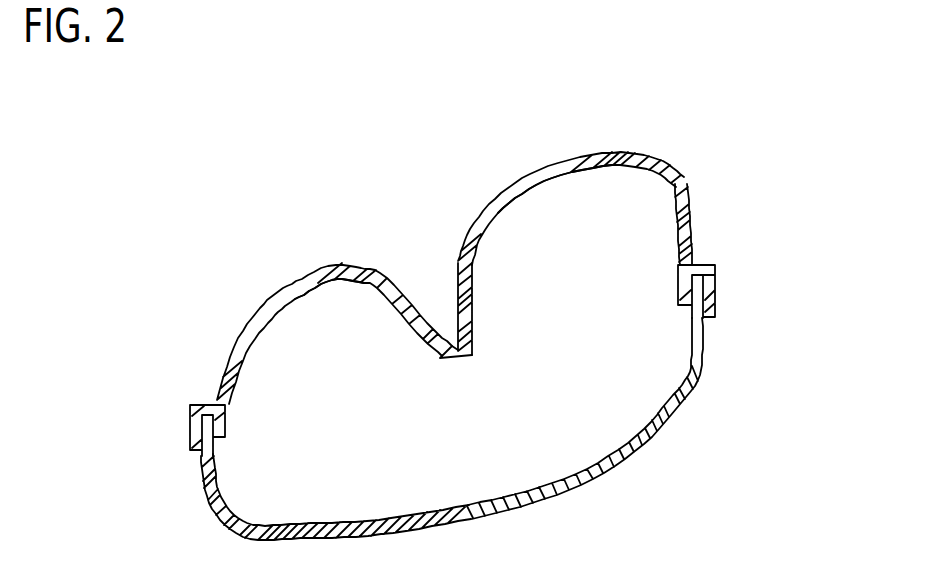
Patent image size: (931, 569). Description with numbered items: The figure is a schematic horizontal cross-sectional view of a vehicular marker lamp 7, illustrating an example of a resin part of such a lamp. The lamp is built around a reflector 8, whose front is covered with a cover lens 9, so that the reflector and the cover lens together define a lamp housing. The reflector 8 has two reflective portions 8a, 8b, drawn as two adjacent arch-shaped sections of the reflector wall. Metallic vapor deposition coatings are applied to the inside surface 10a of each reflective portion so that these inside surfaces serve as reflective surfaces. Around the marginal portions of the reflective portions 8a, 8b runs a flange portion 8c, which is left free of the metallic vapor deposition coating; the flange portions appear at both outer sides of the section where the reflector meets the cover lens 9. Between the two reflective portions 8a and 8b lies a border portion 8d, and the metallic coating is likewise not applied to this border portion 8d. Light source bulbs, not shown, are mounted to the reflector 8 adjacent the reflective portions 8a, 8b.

The vehicular marker lamp 7 is at (180, 250).
The reflector 8 is at (339, 264).
The reflective portion 8a is at (583, 153).
The reflective portion 8b is at (276, 284).
The flange portion 8c is at (190, 428).
The border portion 8d is at (458, 358).
The cover lens 9 is at (590, 472).
The inside surface 10a is at (322, 282).